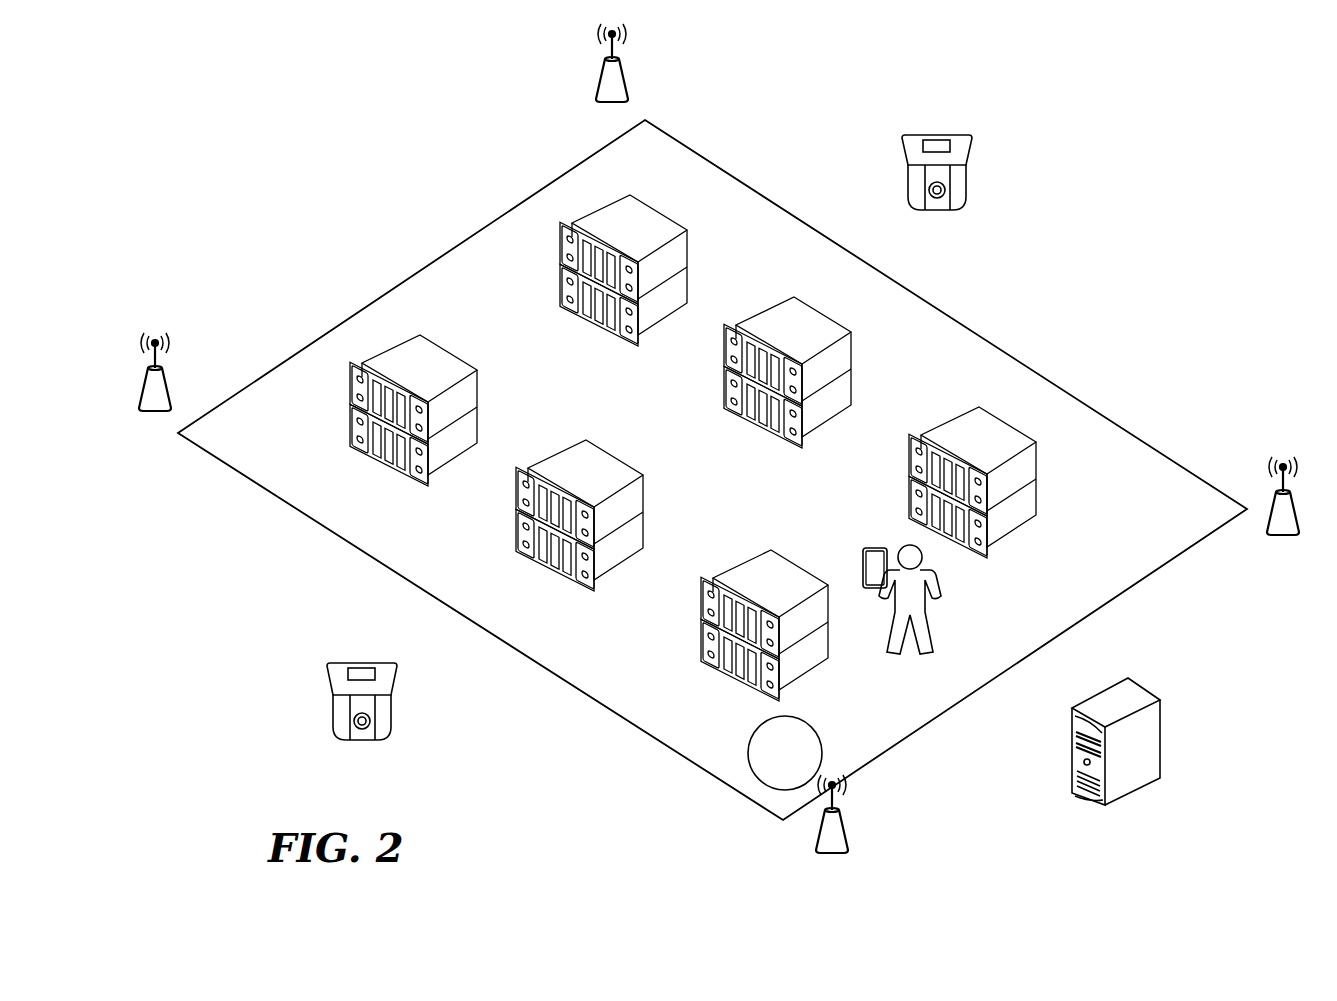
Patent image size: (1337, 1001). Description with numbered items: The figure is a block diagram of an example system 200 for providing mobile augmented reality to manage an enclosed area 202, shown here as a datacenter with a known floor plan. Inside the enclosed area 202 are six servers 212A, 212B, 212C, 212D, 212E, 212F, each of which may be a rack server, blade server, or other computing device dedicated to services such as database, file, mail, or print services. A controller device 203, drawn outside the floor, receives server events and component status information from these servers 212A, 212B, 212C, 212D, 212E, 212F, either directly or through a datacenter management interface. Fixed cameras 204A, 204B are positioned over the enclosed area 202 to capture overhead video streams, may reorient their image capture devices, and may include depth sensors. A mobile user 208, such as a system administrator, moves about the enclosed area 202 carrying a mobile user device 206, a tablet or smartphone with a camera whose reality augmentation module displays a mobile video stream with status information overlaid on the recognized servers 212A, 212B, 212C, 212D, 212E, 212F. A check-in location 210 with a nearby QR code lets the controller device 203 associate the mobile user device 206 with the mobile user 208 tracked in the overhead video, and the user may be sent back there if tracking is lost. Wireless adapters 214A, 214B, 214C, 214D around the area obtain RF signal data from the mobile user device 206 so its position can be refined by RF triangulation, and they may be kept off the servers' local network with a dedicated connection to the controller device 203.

The system 200 is at (345, 120).
The enclosed area 202 is at (470, 234).
The controller device 203 is at (1163, 736).
The fixed camera 204A is at (398, 722).
The fixed camera 204B is at (972, 190).
The mobile user device 206 is at (862, 548).
The mobile user 208 is at (940, 626).
The check-in location 210 is at (754, 737).
The server 212A is at (690, 276).
The server 212B is at (852, 388).
The server 212C is at (1038, 498).
The server 212D is at (478, 382).
The server 212E is at (644, 487).
The server 212F is at (700, 640).
The wireless adapter 214A is at (155, 338).
The wireless adapter 214B is at (603, 90).
The wireless adapter 214C is at (1283, 462).
The wireless adapter 214D is at (848, 833).